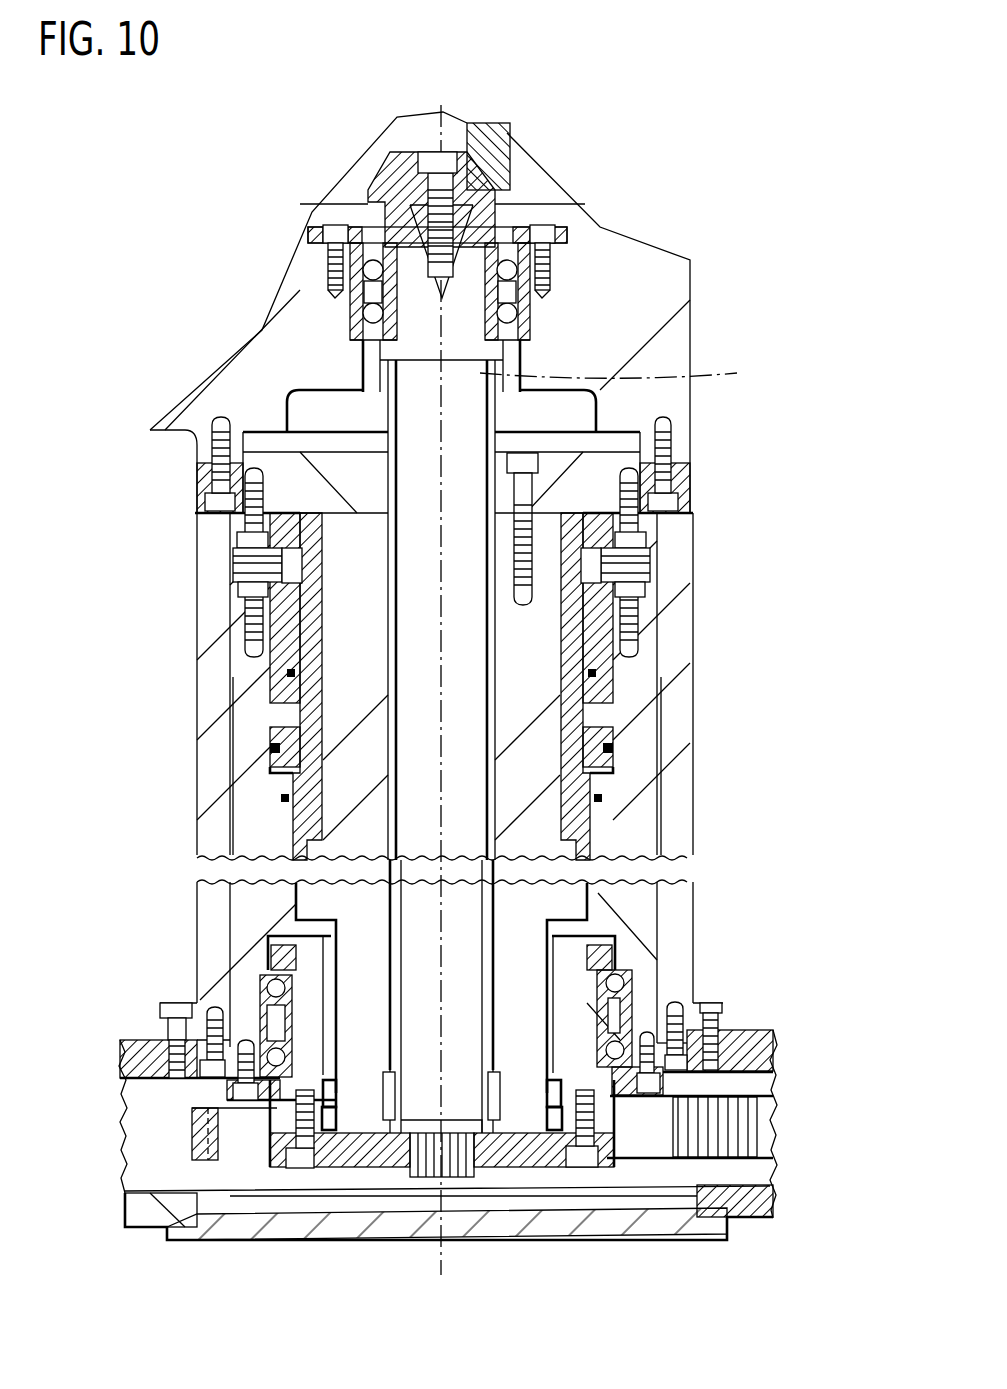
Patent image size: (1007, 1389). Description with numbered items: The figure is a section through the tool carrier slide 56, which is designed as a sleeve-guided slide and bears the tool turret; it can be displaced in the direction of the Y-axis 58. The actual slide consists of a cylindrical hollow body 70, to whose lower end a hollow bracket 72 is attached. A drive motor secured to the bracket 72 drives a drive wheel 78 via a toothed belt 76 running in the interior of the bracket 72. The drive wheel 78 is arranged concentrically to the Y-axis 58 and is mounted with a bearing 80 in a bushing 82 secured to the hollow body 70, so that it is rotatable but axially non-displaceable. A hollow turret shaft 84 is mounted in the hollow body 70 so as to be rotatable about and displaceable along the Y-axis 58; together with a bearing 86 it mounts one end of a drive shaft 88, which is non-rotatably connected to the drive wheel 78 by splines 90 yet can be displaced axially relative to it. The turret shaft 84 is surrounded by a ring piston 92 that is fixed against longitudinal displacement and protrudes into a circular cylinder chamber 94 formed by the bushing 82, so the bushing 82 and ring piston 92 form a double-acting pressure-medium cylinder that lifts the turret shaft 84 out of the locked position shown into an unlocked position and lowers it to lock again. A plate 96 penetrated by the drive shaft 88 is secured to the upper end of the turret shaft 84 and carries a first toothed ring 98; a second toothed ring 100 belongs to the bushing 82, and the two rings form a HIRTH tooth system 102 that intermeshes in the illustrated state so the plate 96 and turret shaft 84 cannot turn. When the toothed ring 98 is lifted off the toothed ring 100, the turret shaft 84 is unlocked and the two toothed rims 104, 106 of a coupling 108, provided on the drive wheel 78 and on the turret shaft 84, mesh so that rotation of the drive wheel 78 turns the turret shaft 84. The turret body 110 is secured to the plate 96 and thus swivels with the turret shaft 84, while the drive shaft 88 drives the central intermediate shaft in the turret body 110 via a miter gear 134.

The miter gear 134 is at (520, 188).
The turret body 110 is at (668, 280).
The drive shaft 88 is at (413, 393).
The Y-axis 58 is at (737, 373).
The plate 96 is at (205, 471).
The first toothed ring 98 is at (245, 518).
The HIRTH tooth system 102 is at (232, 566).
The second toothed ring 100 is at (262, 605).
The circular cylinder chamber 94 is at (288, 716).
The ring piston 92 is at (272, 768).
The hollow shaft 84 is at (345, 810).
The tool carrier slide 56 is at (705, 572).
The cylindrical hollow body 70 is at (677, 670).
The bushing 82 is at (640, 790).
The bearing 80 is at (645, 988).
The drive wheel 78 is at (238, 1130).
The toothed belt 76 is at (255, 1166).
The hollow bracket 72 is at (155, 1248).
The bearing 86 is at (378, 1106).
The splines 90 is at (436, 1140).
The coupling 108 is at (538, 1087).
The toothed rim 106 is at (585, 1100).
The toothed rim 104 is at (565, 1097).